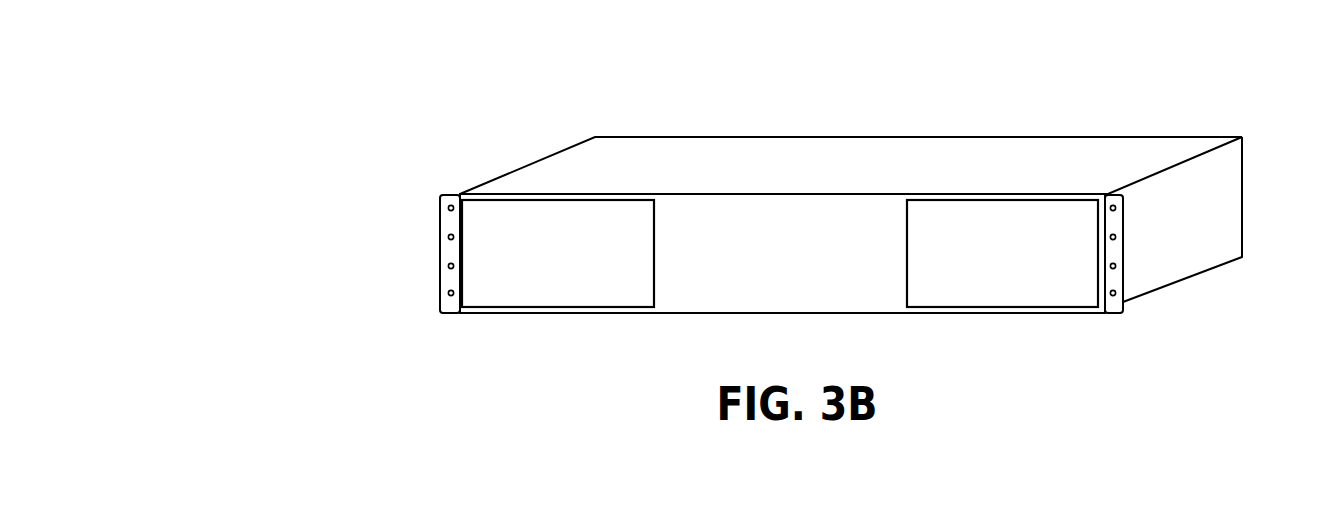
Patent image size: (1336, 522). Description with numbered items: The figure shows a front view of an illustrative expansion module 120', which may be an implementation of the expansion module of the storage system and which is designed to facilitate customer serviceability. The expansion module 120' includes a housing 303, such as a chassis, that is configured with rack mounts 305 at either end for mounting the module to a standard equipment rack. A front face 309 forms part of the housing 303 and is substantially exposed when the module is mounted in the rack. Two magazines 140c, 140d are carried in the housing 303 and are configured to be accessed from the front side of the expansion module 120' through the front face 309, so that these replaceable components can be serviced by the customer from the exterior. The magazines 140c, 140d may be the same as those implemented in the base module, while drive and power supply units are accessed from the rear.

The expansion module 120' is at (797, 176).
The housing 303 is at (557, 153).
The rack mounts 305 is at (440, 235).
The front face 309 is at (825, 224).
The magazine 140c is at (582, 279).
The magazine 140d is at (978, 279).